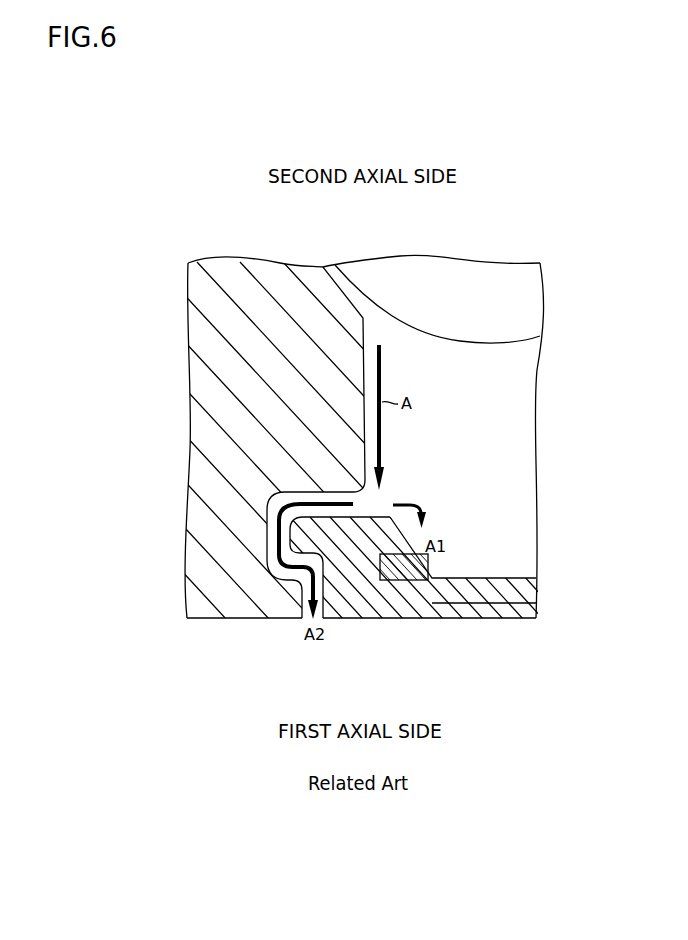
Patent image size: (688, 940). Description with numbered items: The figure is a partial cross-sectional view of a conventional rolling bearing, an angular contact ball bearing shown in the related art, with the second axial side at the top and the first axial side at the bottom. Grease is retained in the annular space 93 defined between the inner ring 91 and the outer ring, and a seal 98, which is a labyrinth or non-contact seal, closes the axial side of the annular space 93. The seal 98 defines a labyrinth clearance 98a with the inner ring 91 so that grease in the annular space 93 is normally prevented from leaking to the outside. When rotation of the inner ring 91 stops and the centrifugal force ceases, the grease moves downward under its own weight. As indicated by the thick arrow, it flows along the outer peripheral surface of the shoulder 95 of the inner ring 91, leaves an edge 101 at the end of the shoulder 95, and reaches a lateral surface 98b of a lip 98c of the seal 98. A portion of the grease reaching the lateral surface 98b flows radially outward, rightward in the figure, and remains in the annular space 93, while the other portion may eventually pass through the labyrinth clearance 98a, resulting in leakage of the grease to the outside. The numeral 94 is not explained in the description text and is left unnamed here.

The inner ring 91 is at (243, 620).
The annular space 93 is at (487, 440).
The rotor / wall portion 94 is at (505, 336).
The shoulder 95 is at (330, 371).
The seal 98 is at (457, 618).
The labyrinth clearance 98a is at (296, 566).
The lateral surface 98b is at (377, 517).
The lip 98c is at (288, 540).
The edge 101 is at (352, 478).